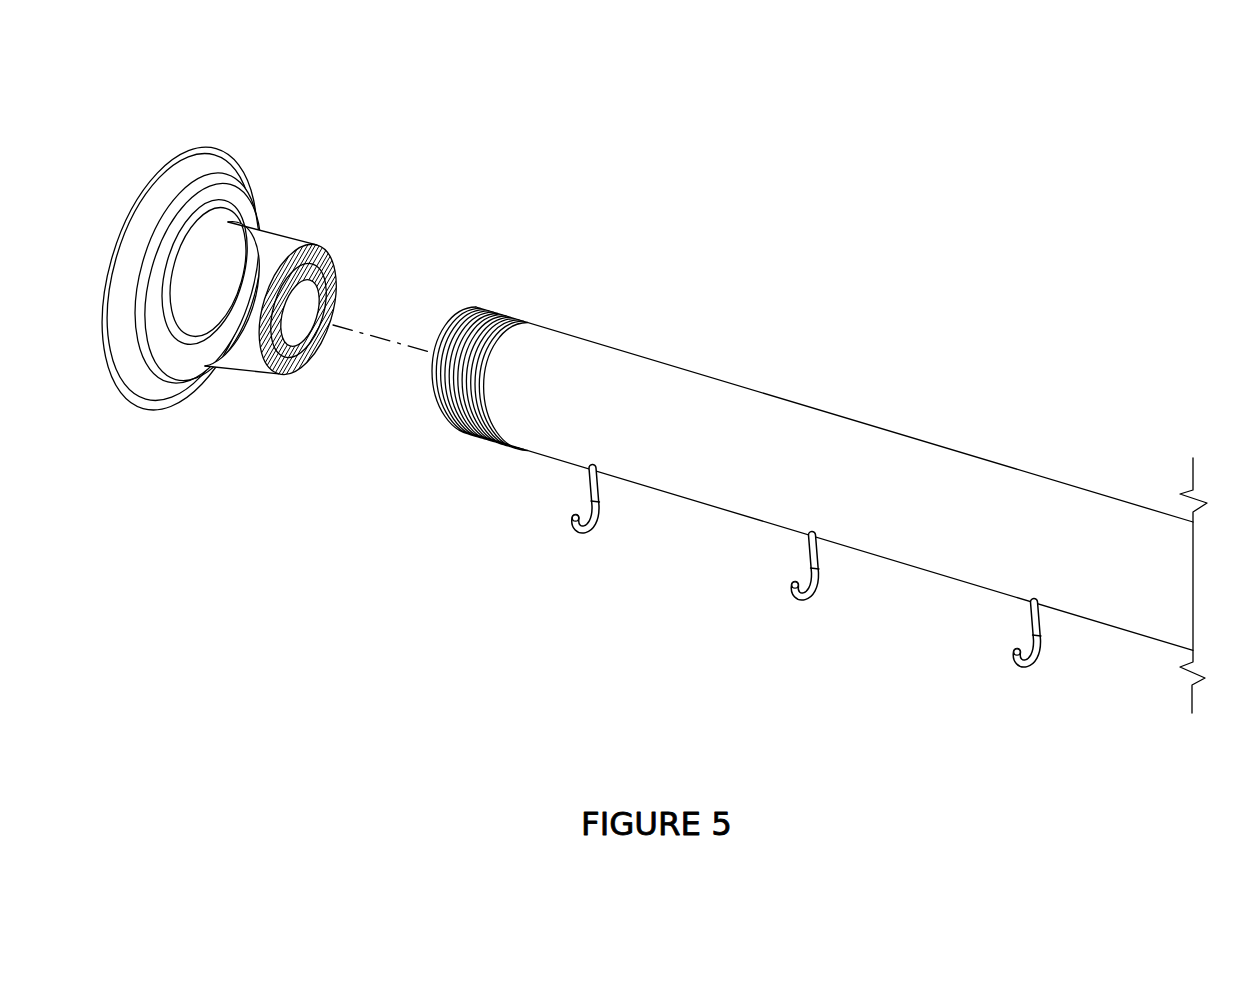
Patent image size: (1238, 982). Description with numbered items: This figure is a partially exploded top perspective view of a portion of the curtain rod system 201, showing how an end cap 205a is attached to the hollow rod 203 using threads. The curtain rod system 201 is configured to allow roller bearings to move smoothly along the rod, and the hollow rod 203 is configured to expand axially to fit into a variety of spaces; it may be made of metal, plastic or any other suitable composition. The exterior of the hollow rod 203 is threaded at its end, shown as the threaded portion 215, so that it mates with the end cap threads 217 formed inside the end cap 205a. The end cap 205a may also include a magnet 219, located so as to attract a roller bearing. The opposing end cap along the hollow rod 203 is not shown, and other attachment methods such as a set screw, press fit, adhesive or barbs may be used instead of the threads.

The curtain rod system 201 is at (681, 174).
The hollow rod 203 is at (586, 378).
The end cap 205a is at (207, 161).
The threaded end of pipe 215 is at (495, 307).
The end cap threads 217 is at (319, 253).
The magnet 219 is at (324, 292).